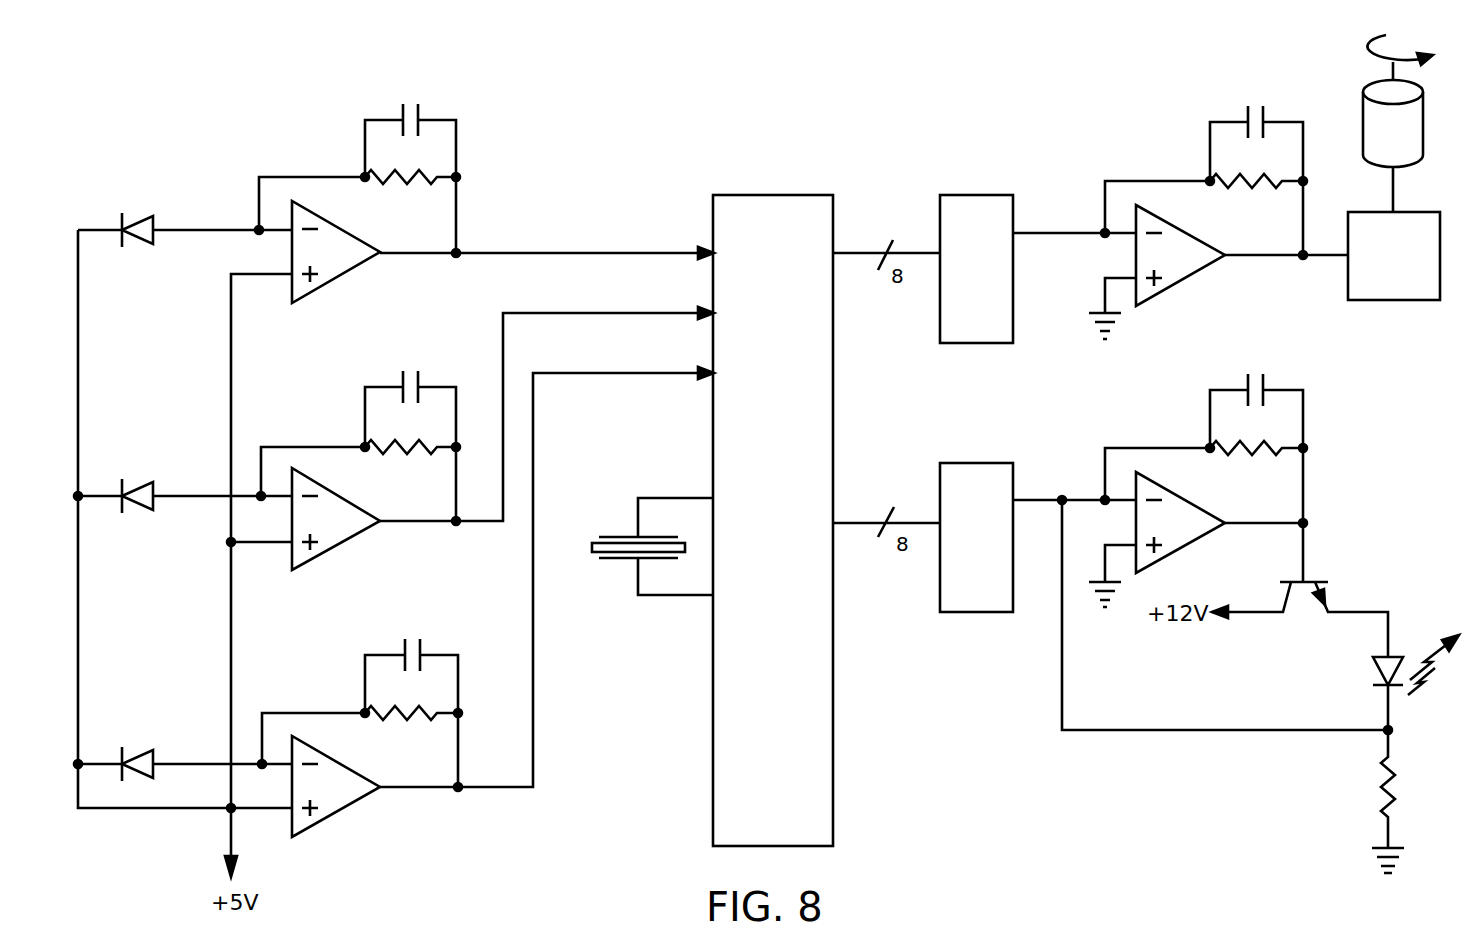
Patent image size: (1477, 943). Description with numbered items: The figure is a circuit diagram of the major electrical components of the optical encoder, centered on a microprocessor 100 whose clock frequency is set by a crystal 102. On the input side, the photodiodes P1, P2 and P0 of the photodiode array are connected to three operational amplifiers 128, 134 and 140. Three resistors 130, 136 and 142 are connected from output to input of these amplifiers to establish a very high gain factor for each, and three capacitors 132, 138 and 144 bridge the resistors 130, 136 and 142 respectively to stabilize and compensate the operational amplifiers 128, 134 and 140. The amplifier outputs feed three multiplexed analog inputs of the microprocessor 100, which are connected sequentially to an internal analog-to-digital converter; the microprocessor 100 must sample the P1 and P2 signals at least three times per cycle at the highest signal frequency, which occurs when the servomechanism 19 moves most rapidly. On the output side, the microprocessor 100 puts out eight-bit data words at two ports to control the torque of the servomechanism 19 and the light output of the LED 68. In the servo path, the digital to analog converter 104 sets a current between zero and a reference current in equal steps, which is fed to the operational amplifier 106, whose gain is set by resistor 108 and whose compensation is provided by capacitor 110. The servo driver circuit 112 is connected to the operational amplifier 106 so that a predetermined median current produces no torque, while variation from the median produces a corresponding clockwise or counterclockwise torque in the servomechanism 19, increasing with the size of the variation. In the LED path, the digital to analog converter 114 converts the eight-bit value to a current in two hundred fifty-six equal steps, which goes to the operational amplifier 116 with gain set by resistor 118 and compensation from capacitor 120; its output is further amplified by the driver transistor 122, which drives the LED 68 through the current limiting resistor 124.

The photodiode P1 is at (139, 248).
The photodiode P2 is at (140, 514).
The photodiode P0 is at (149, 747).
The operational amplifier 128 is at (340, 270).
The resistor 130 is at (413, 186).
The capacitor 132 is at (412, 103).
The operational amplifier 134 is at (336, 540).
The resistor 136 is at (415, 457).
The capacitor 138 is at (413, 372).
The operational amplifier 140 is at (343, 805).
The resistor 142 is at (418, 723).
The capacitor 144 is at (413, 640).
The microprocessor 100 is at (792, 772).
The crystal 102 is at (615, 562).
The digital to analog converter 104 is at (998, 324).
The operational amplifier 106 is at (1185, 268).
The resistor 108 is at (1259, 192).
The capacitor 110 is at (1255, 106).
The servo driver circuit 112 is at (1411, 291).
The servomechanism 19 is at (1368, 116).
The digital to analog converter 114 is at (998, 590).
The operational amplifier 116 is at (1183, 540).
The resistor 118 is at (1261, 457).
The capacitor 120 is at (1258, 376).
The driver transistor 122 is at (1315, 578).
The LED 68 is at (1372, 668).
The current limiting resistor 124 is at (1381, 792).